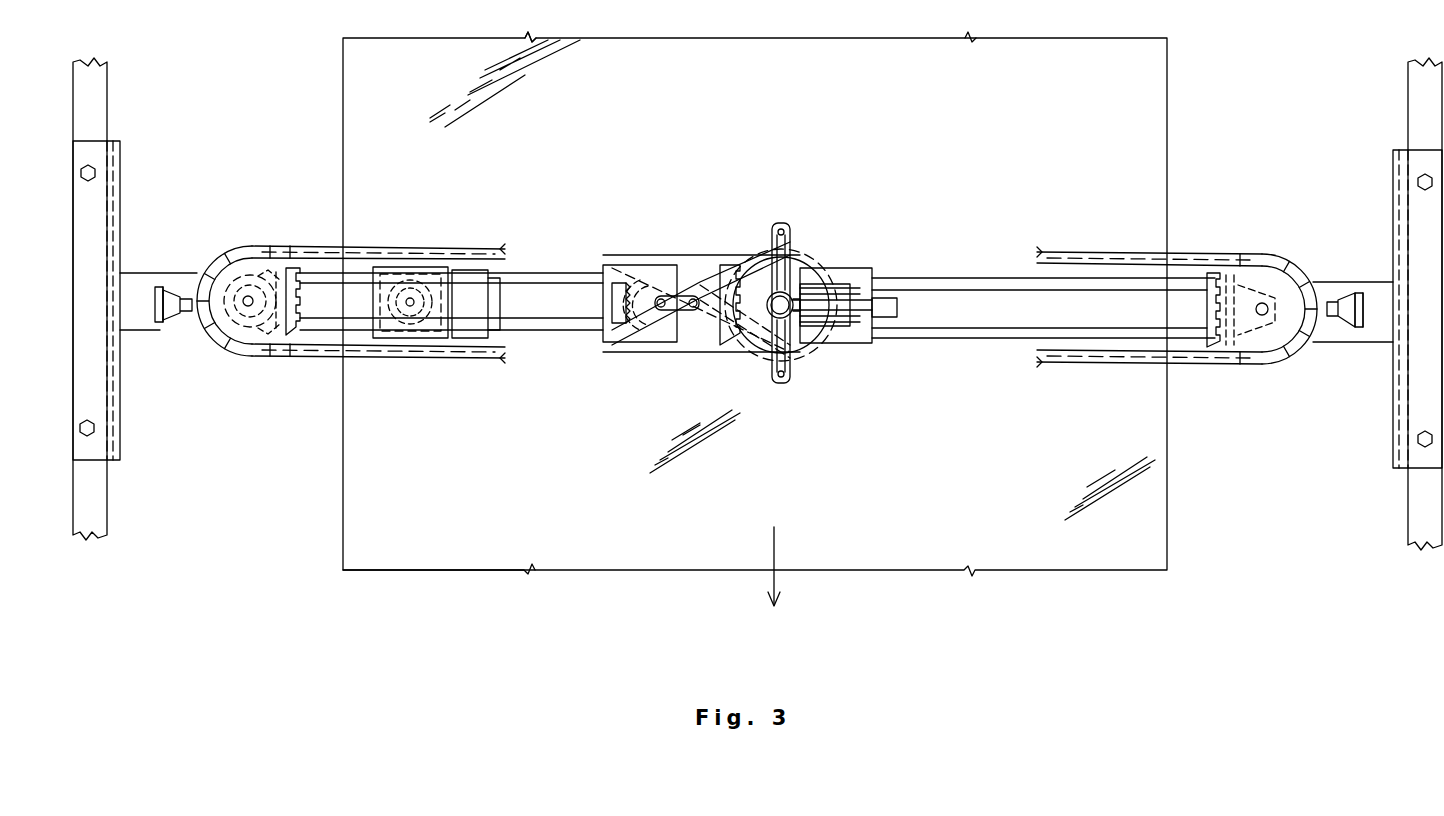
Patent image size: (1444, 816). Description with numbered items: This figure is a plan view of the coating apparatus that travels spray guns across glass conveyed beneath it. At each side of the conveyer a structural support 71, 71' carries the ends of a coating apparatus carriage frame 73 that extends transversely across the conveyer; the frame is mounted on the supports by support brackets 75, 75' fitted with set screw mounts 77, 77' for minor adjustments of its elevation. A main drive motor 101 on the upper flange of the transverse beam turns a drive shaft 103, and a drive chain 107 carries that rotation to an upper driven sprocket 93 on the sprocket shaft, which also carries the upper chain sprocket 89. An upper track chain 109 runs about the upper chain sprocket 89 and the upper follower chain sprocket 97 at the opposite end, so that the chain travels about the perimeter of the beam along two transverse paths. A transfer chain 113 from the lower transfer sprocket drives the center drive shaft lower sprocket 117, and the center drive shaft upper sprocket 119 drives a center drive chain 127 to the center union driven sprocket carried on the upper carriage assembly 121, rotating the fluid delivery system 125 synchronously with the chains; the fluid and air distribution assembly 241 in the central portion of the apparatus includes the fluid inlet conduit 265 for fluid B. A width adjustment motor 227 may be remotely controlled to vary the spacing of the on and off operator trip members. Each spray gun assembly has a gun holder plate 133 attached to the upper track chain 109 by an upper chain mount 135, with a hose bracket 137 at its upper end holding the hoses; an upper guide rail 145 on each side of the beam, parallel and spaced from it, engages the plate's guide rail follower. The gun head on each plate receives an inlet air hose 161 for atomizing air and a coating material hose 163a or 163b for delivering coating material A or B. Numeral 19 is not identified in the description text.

The glass panel / window 19 is at (1167, 505).
The structural support 71 is at (122, 299).
The structural support 71' is at (1398, 304).
The coating apparatus carriage frame 73 is at (155, 335).
The support bracket 75 is at (129, 305).
The support bracket 75' is at (1417, 309).
The set screw mount 77 is at (126, 294).
The set screw mount 77' is at (1386, 301).
The upper chain sprocket 89 is at (248, 338).
The upper driven sprocket 93 is at (282, 275).
The upper follower chain sprocket 97 is at (1263, 275).
The main drive motor 101 is at (480, 270).
The drive shaft 103 is at (420, 268).
The drive chain 107 is at (410, 290).
The upper track chain 109 is at (262, 248).
The transfer chain 113 is at (470, 350).
The center drive shaft lower sprocket 117 is at (630, 340).
The center drive shaft upper sprocket 119 is at (643, 338).
The upper carriage assembly 121 is at (870, 343).
The fluid delivery system 125 is at (736, 358).
The center drive chain 127 is at (682, 338).
The gun holder plate 133 is at (185, 290).
The upper chain mount 135 is at (188, 322).
The hose bracket 137 is at (160, 288).
The upper guide rail 145 is at (1180, 258).
The inlet air hose 161 is at (898, 308).
The coating material hose 163a is at (868, 318).
The coating material hose 163b is at (868, 296).
The width adjustment motor 227 is at (728, 298).
The fluid and air distribution assembly 241 is at (812, 235).
The fluid inlet conduit 265 is at (795, 298).